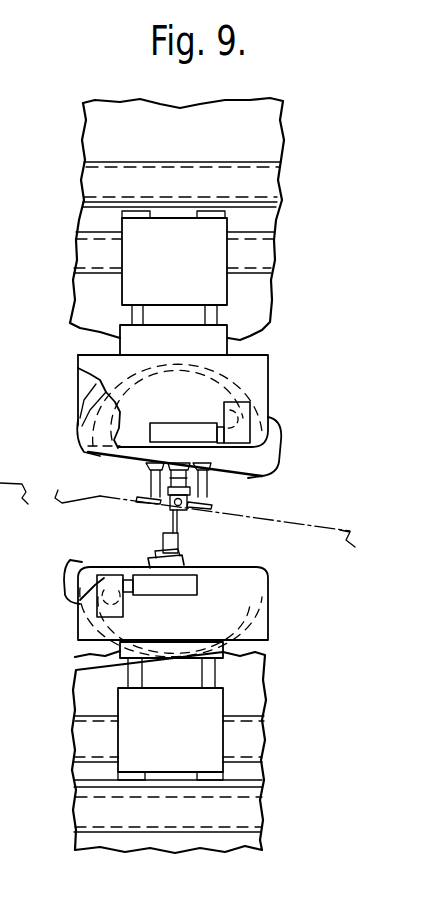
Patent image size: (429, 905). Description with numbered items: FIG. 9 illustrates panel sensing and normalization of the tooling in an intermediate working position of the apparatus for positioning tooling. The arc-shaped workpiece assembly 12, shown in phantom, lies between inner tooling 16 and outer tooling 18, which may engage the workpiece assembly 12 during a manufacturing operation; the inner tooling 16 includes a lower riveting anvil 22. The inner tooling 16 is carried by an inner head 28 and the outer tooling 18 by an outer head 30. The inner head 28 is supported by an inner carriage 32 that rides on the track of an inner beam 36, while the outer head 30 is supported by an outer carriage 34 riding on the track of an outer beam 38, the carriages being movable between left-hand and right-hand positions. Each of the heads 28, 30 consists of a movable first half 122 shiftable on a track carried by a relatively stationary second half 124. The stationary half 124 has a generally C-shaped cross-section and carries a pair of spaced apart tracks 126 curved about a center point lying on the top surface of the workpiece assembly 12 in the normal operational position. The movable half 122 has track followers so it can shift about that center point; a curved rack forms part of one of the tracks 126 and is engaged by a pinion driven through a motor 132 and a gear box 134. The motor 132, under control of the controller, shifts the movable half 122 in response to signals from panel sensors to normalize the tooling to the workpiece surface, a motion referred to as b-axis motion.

The workpiece assembly 12 is at (317, 522).
The inner tooling 16 is at (186, 532).
The outer tooling 18 is at (130, 477).
The lower riveting anvil 22 is at (172, 518).
The inner head 28 is at (66, 636).
The outer head 30 is at (292, 381).
The inner carriage 32 is at (246, 741).
The outer carriage 34 is at (248, 251).
The inner beam 36 is at (285, 812).
The outer beam 38 is at (296, 189).
The movable first half 122 is at (282, 457).
The stationary second half 124 is at (78, 362).
The tracks 126 is at (73, 422).
The motor 132 is at (182, 425).
The gear box 134 is at (246, 480).